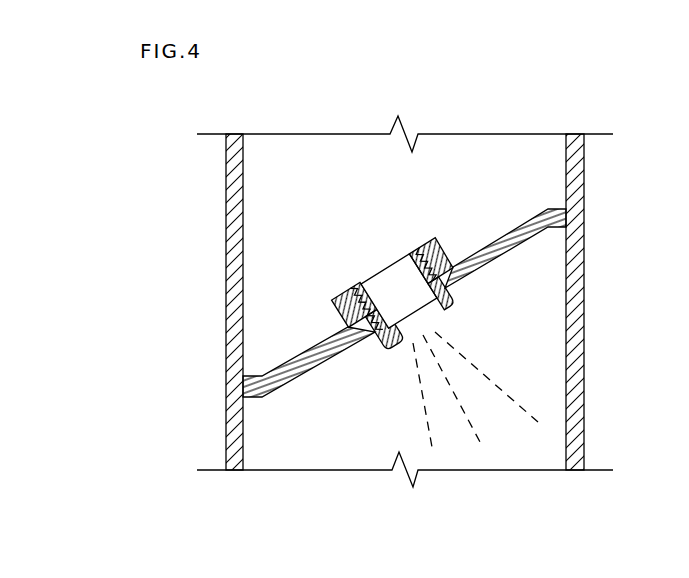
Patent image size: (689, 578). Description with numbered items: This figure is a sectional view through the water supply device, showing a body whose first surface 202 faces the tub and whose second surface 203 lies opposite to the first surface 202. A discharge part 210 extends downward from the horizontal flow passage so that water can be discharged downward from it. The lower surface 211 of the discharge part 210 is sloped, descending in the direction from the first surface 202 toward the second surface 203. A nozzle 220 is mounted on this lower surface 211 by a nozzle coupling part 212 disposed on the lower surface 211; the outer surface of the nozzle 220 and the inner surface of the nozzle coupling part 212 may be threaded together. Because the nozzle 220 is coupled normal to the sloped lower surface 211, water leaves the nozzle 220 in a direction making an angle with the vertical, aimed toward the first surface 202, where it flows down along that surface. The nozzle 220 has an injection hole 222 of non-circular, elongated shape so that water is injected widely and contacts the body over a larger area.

The first surface 202 is at (577, 393).
The second surface 203 is at (232, 422).
The discharge part 210 is at (275, 203).
The lower surface 211 is at (521, 226).
The nozzle coupling part 212 is at (347, 300).
The nozzle 220 is at (393, 345).
The injection hole 222 is at (453, 311).